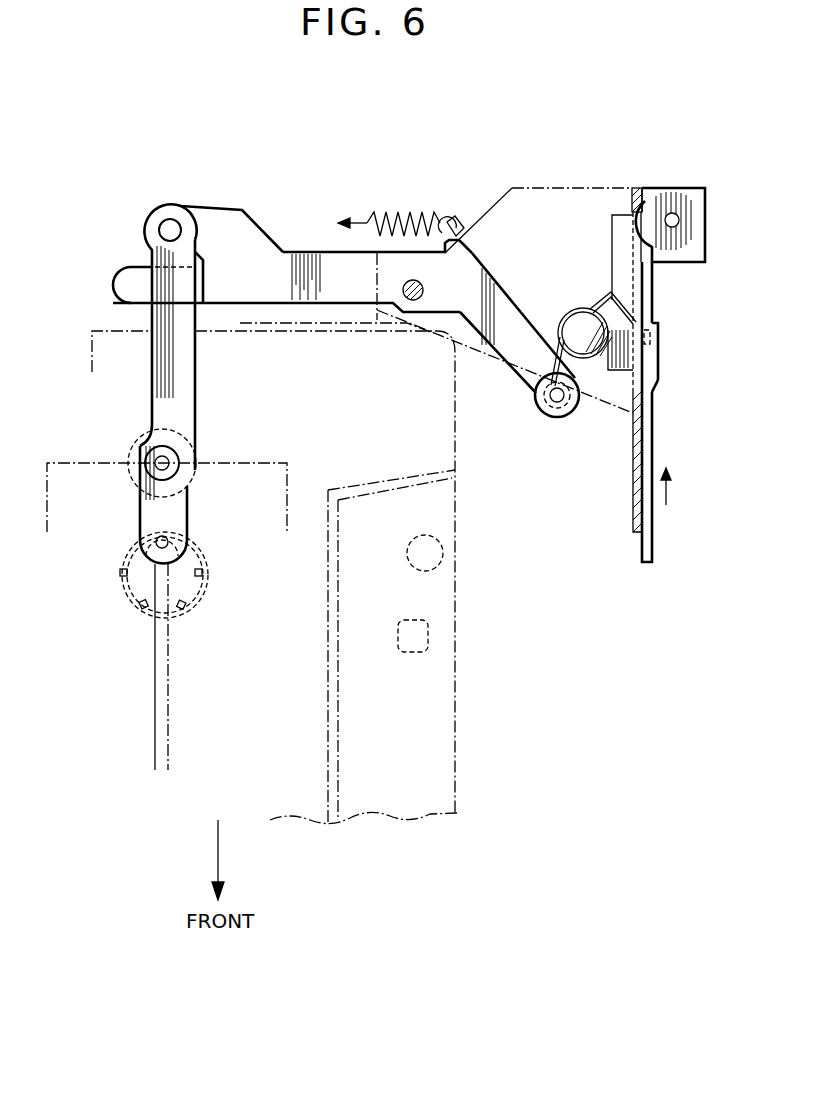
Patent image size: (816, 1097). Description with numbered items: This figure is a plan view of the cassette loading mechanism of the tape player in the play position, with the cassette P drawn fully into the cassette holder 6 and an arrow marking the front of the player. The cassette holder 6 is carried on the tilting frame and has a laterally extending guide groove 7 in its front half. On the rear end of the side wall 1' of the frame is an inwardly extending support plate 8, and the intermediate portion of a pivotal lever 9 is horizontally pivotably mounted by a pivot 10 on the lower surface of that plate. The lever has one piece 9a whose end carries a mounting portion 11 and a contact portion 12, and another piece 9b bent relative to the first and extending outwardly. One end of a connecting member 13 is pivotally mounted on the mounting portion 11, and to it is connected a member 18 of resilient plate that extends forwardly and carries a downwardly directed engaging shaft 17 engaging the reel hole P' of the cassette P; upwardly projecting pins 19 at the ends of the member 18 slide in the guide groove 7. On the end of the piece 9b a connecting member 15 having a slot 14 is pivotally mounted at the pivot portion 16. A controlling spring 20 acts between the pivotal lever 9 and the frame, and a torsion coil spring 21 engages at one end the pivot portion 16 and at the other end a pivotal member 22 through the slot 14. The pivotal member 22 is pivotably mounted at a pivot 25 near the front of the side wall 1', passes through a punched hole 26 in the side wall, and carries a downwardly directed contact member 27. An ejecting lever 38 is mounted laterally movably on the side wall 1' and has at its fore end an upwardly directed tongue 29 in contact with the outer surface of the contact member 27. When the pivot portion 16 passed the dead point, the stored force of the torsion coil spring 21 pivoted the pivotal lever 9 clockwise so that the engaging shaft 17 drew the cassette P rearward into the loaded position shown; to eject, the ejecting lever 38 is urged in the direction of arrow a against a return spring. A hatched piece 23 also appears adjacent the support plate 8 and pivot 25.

The cassette holder 6 is at (92, 355).
The guide groove 7 is at (155, 688).
The support plate 8 is at (535, 188).
The cassette P is at (392, 577).
The reel hole P' is at (187, 581).
The pivotal lever 9 is at (318, 250).
The one piece of pivotal lever 9a is at (333, 297).
The other piece of pivotal lever 9b is at (502, 311).
The pivot 10 is at (421, 290).
The mounting portion 11 is at (223, 215).
The contact portion 12 is at (126, 269).
The connecting member 13 is at (196, 392).
The slot 14 is at (620, 362).
The connecting member 15 is at (595, 392).
The pivot portion 16 is at (555, 399).
The engaging shaft 17 is at (142, 561).
The resilient plate member 18 is at (146, 512).
The pins 19 is at (153, 451).
The controlling spring 20 is at (403, 218).
The torsion coil spring 21 is at (575, 306).
The pivotal member 22 is at (617, 248).
The block 23 is at (651, 191).
The pivot 25 is at (678, 218).
The punched hole 26 is at (657, 384).
The contact member 27 is at (648, 337).
The tongue 29 is at (659, 350).
The ejecting lever 38 is at (652, 531).
The side wall 1' is at (619, 372).
The arrow a is at (665, 474).